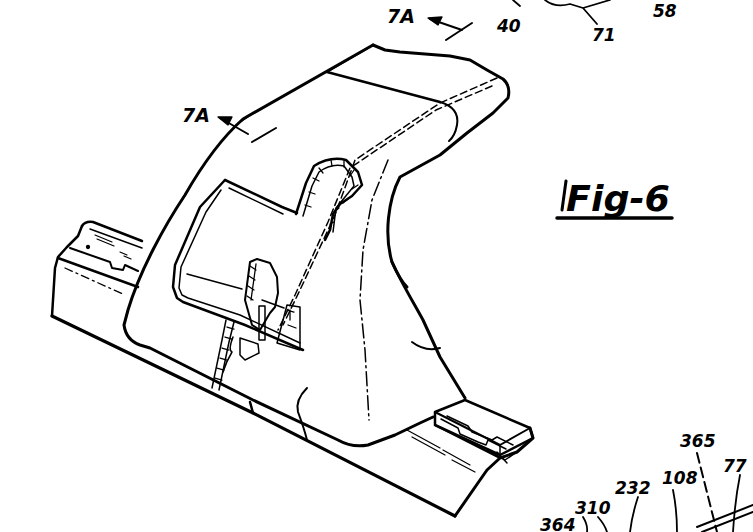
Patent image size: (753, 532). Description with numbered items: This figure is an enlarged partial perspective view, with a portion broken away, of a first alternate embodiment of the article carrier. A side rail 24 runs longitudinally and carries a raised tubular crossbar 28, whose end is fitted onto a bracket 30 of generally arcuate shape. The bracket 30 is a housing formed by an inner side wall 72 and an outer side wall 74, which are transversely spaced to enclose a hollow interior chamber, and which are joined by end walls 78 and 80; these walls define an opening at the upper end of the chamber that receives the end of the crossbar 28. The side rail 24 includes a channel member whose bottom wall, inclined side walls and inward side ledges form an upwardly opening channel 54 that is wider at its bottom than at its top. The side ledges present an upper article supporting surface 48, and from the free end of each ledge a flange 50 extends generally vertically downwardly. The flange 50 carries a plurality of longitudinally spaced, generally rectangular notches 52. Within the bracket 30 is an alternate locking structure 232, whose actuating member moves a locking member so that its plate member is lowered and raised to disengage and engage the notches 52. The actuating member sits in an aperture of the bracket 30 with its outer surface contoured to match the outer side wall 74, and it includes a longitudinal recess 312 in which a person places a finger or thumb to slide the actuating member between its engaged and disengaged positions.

The side rail 24 is at (388, 474).
The crossbar 28 is at (353, 65).
The bracket 30 is at (290, 90).
The article supporting surface 48 is at (470, 422).
The flange 50 is at (510, 458).
The notches 52 is at (500, 443).
The channel 54 is at (508, 463).
The inner side wall 72 is at (408, 287).
The outer side wall 74 is at (303, 443).
The end wall 78 is at (443, 345).
The end wall 80 is at (250, 115).
The locking structure 232 is at (199, 209).
The longitudinal recess 312 is at (240, 290).